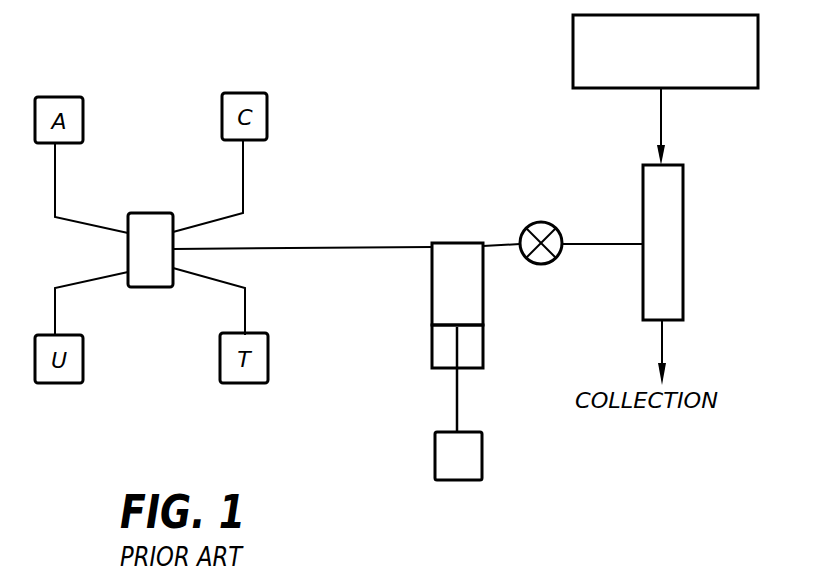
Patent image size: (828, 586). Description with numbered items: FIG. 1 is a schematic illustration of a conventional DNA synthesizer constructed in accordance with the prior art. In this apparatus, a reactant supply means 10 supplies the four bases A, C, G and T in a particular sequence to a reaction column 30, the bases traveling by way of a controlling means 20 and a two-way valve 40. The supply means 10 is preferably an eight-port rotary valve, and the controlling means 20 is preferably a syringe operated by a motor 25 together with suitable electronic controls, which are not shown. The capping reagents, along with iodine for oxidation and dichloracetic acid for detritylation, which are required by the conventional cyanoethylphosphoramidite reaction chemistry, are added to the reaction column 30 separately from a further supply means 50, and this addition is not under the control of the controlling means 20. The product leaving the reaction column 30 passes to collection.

The reactant supply means 10 is at (150, 250).
The controlling means 20 is at (432, 278).
The motor 25 is at (458, 456).
The reaction column 30 is at (685, 260).
The two-way valve 40 is at (523, 227).
The supply means 50 is at (582, 30).